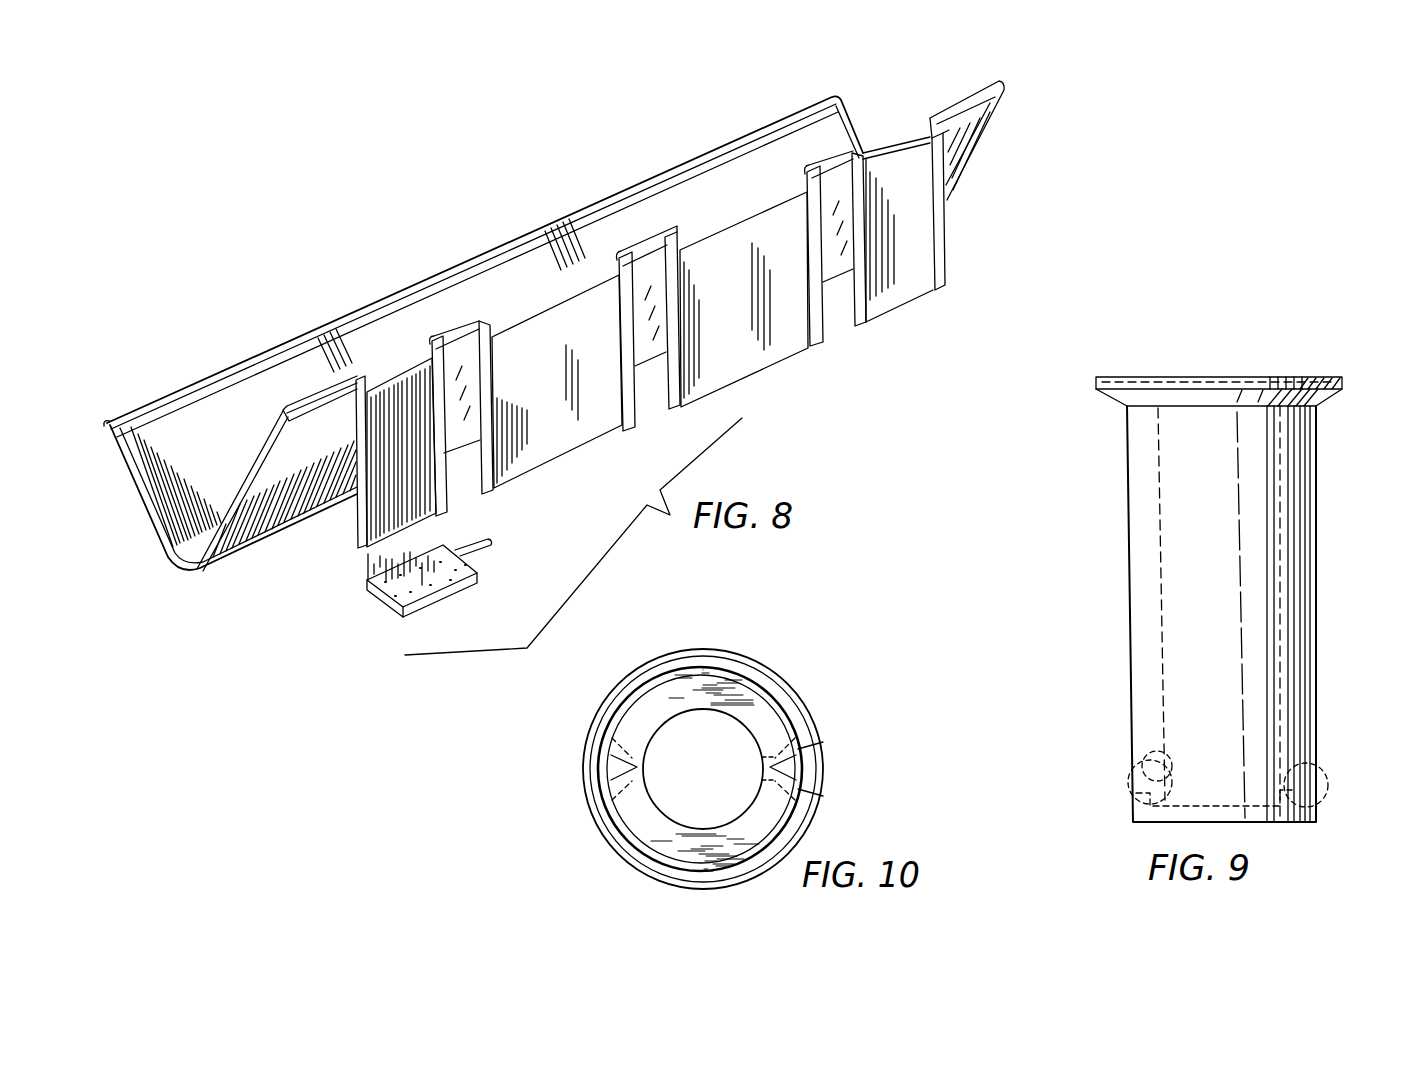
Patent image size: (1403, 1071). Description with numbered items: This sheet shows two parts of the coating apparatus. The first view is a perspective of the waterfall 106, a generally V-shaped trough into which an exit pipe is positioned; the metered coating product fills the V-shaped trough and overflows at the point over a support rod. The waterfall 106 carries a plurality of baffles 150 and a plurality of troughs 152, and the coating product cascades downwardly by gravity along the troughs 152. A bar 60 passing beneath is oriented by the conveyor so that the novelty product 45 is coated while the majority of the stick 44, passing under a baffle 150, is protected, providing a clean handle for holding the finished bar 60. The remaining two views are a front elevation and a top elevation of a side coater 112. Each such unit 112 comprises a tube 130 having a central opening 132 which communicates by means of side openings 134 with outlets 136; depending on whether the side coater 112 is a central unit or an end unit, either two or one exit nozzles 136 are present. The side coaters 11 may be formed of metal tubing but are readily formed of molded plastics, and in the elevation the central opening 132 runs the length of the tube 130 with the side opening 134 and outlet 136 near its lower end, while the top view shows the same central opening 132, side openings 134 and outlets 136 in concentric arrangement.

In FIG. 8, the waterfall 106 is at (450, 249).
In FIG. 8, the baffle 150 is at (323, 390).
In FIG. 8, the trough 152 is at (402, 372).
In FIG. 8, the stick 44 is at (485, 552).
In FIG. 8, the novelty product 45 is at (435, 597).
In FIG. 8, the bar 60 is at (482, 592).
In FIG. 10, the side coater 11 is at (680, 636).
In FIG. 9, the side coater 112 is at (1330, 597).
In FIG. 10, the tube 130 is at (703, 769).
In FIG. 9, the tube 130 is at (1315, 520).
In FIG. 10, the central opening 132 is at (681, 712).
In FIG. 9, the central opening 132 is at (1278, 538).
In FIG. 10, the side opening 134 is at (616, 727).
In FIG. 9, the side opening 134 is at (1163, 760).
In FIG. 10, the outlet 136 is at (612, 803).
In FIG. 9, the outlet 136 is at (1138, 773).